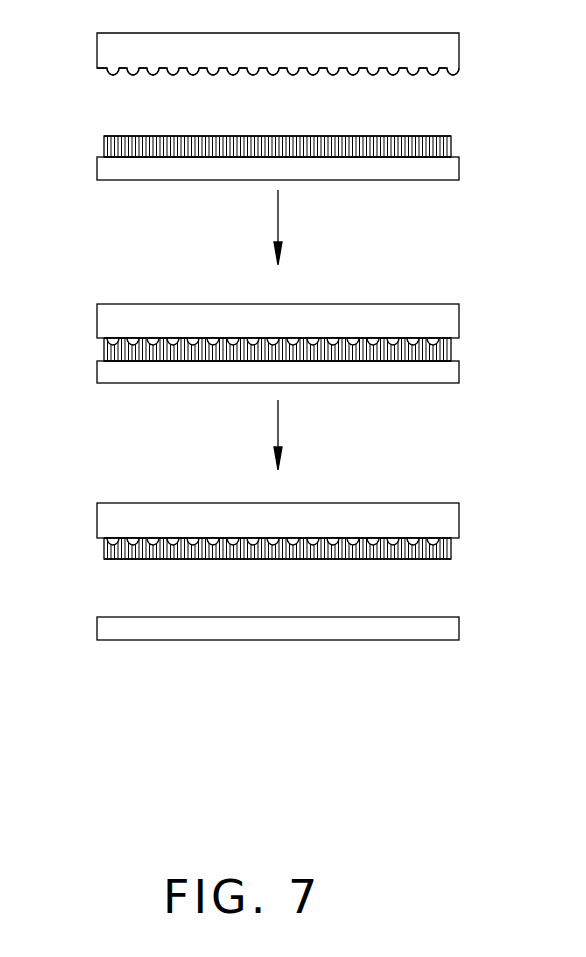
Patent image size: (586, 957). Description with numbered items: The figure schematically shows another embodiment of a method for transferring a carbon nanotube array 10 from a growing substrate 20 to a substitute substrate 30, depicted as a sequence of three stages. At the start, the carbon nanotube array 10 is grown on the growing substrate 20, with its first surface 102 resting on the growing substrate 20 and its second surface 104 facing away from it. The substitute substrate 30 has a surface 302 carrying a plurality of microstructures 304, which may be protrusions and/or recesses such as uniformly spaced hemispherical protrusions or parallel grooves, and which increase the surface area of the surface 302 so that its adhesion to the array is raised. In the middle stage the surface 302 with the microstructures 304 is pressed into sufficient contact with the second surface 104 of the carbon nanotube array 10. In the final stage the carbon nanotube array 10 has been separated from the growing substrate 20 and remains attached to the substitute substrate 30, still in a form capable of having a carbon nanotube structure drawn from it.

The substitute substrate 30 is at (460, 49).
The microstructures 304 is at (443, 72).
The surface 302 is at (431, 74).
The carbon nanotube array 10 is at (445, 145).
The second surface 104 is at (127, 136).
The first surface 102 is at (143, 157).
The growing substrate 20 is at (455, 172).